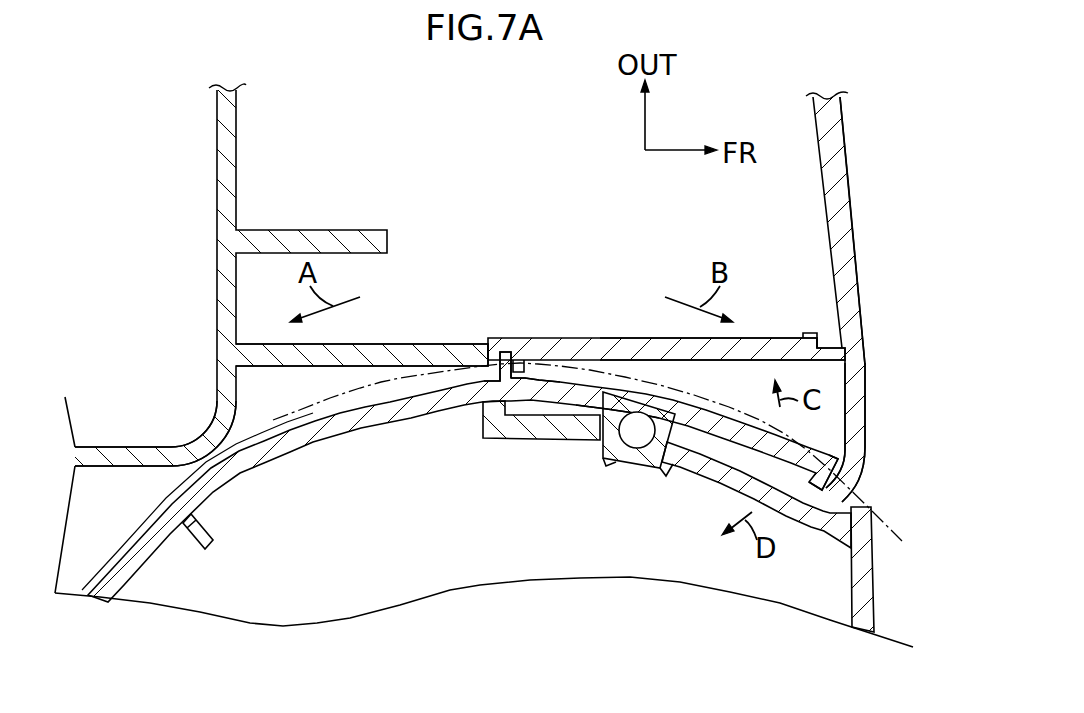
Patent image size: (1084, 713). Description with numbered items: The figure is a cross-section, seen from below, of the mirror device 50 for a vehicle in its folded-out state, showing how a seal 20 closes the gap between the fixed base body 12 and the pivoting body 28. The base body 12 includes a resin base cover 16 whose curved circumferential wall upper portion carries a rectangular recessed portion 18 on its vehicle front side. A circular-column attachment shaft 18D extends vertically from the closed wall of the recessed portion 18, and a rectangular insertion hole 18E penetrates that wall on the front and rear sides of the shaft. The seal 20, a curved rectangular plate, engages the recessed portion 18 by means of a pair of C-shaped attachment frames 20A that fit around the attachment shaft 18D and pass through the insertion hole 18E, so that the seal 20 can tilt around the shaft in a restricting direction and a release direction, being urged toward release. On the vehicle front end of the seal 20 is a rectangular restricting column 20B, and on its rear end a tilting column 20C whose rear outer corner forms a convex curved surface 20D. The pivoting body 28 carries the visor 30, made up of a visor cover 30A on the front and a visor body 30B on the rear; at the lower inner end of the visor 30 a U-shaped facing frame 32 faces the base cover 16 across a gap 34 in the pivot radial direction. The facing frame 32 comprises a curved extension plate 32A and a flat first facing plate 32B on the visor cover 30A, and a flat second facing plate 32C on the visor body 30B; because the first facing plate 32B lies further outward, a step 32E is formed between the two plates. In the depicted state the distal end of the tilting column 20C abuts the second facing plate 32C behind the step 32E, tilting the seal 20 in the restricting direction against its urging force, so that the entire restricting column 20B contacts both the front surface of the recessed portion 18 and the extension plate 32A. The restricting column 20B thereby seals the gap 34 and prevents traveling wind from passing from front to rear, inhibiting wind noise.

The base body 12 is at (118, 558).
The base cover 16 is at (875, 587).
The recessed portion 18 is at (537, 438).
The attachment shaft 18D is at (637, 449).
The insertion hole 18E is at (604, 451).
The seal 20 is at (712, 412).
The attachment frame 20A is at (613, 456).
The restricting column 20B is at (832, 462).
The tilting column 20C is at (540, 368).
The curved surface 20D is at (496, 355).
The pivoting body 28 is at (848, 135).
The visor 30 is at (855, 195).
The visor cover 30A is at (857, 240).
The visor body 30B is at (130, 466).
The facing frame 32 is at (613, 338).
The extension plate 32A is at (865, 412).
The first facing plate 32B is at (647, 338).
The second facing plate 32C is at (405, 344).
The step 32E is at (520, 359).
The gap 34 is at (803, 336).
The mirror device for a vehicle 50 is at (132, 213).